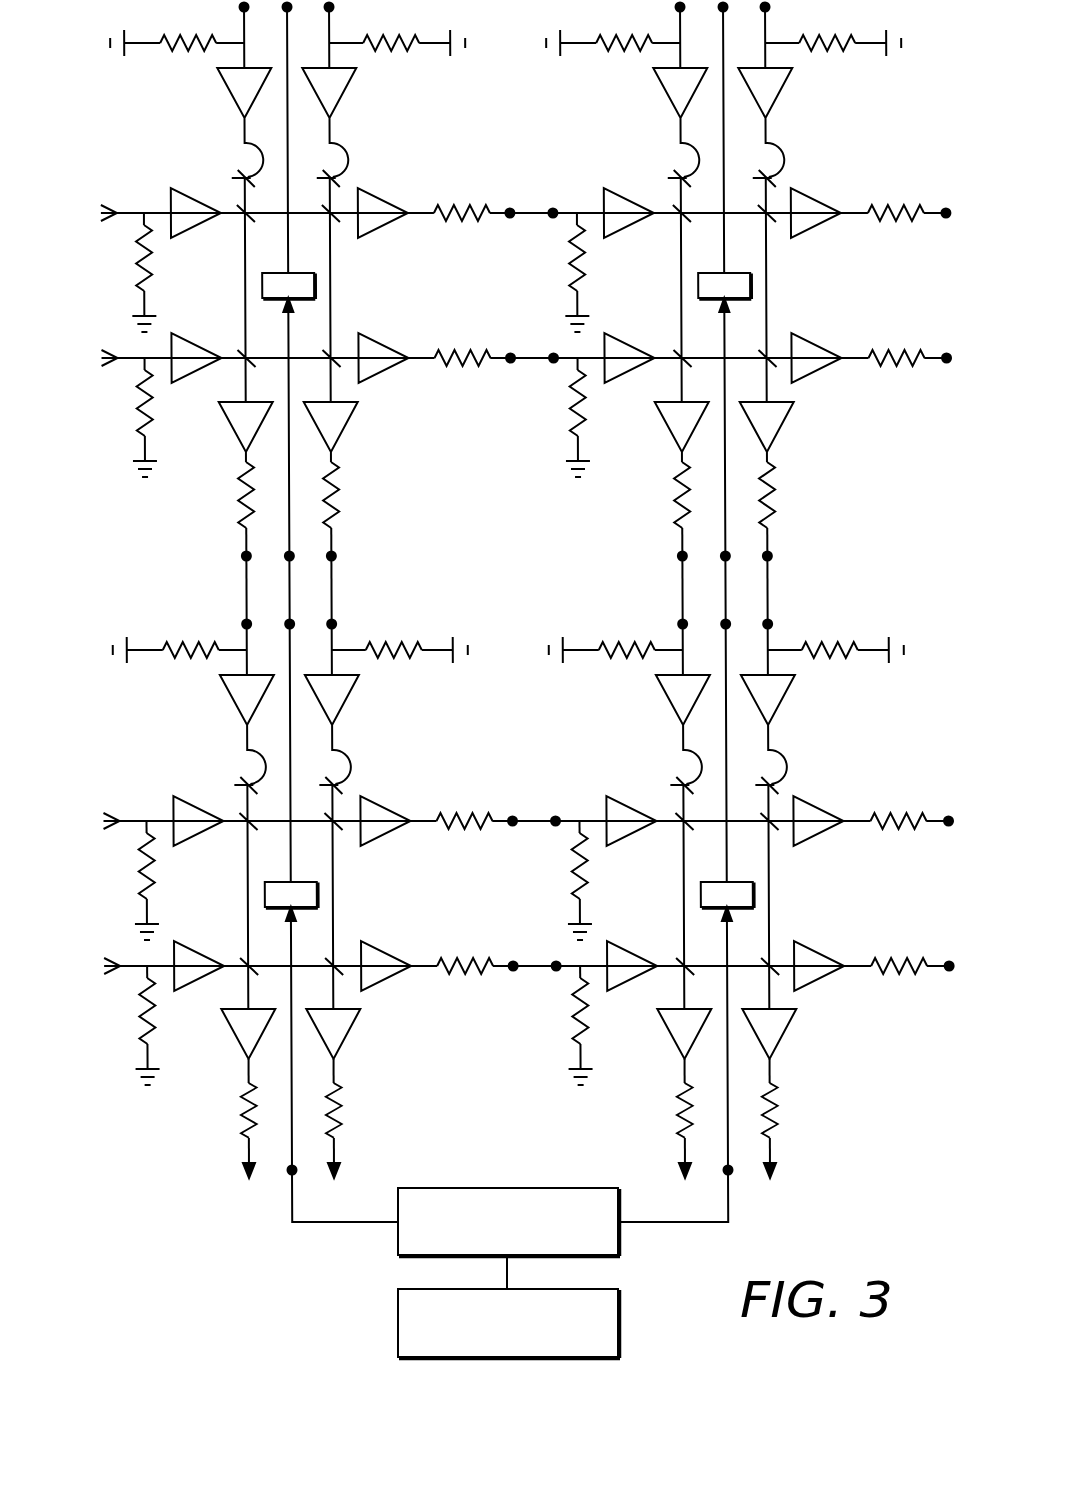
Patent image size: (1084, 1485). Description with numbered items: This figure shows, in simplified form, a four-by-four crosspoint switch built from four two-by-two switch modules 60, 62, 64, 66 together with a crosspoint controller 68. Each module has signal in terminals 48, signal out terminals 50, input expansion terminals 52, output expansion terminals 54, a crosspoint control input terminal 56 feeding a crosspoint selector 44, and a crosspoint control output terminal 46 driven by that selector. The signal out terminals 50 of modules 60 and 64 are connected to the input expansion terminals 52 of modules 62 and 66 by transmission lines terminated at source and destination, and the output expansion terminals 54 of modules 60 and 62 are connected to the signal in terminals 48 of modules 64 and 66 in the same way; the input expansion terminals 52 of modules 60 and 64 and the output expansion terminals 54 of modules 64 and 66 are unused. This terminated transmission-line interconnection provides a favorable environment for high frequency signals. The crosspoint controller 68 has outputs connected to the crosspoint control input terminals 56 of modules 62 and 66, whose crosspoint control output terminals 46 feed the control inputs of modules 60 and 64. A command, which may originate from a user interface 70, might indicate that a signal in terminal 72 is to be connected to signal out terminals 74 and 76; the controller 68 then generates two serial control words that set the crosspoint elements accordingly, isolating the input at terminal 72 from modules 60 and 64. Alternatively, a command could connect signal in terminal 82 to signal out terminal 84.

The crosspoint selector 44 is at (318, 882).
The crosspoint control output terminal 46 is at (287, 620).
The signal in terminal 48 is at (552, 209).
The signal out terminal 50 is at (240, 556).
The input expansion terminal 52 is at (333, 8).
The output expansion terminal 54 is at (509, 209).
The crosspoint control input terminal 56 is at (291, 559).
The switch module 60 is at (215, 145).
The switch module 62 is at (219, 760).
The switch module 64 is at (646, 145).
The switch module 66 is at (648, 757).
The crosspoint controller 68 is at (473, 1187).
The user interface 70 is at (619, 1345).
The signal in terminal 72 is at (128, 820).
The signal out terminal 74 is at (247, 1150).
The signal out terminal 76 is at (771, 1142).
The signal in terminal 82 is at (127, 212).
The signal out terminal 84 is at (684, 1155).